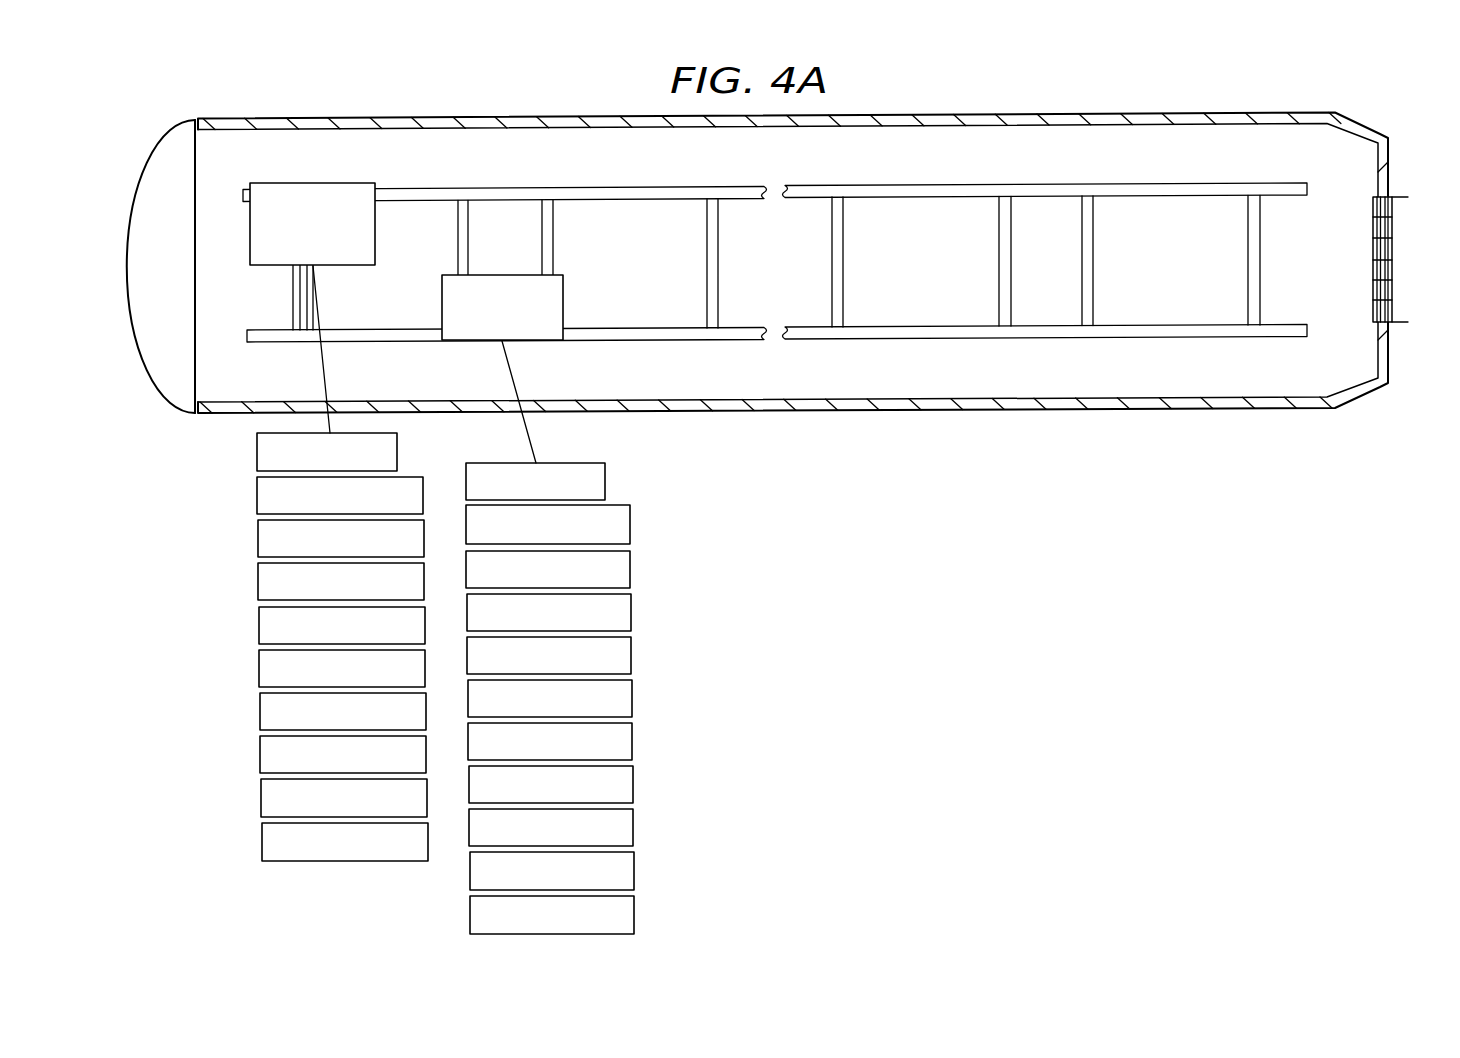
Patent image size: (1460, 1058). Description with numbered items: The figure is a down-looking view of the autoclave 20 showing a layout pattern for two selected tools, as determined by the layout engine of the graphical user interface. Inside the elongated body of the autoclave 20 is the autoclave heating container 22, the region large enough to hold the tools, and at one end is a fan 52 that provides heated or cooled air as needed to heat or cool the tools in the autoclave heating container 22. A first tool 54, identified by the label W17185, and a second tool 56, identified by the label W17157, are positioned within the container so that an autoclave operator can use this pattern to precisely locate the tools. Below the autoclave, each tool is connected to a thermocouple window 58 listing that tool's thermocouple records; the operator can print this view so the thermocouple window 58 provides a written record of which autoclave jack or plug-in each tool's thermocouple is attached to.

The autoclave 20 is at (488, 113).
The autoclave heating container 22 is at (773, 168).
The fan 52 is at (1392, 269).
The first tool 54 is at (375, 237).
The second tool 56 is at (563, 307).
The thermocouple window 58 is at (241, 664).